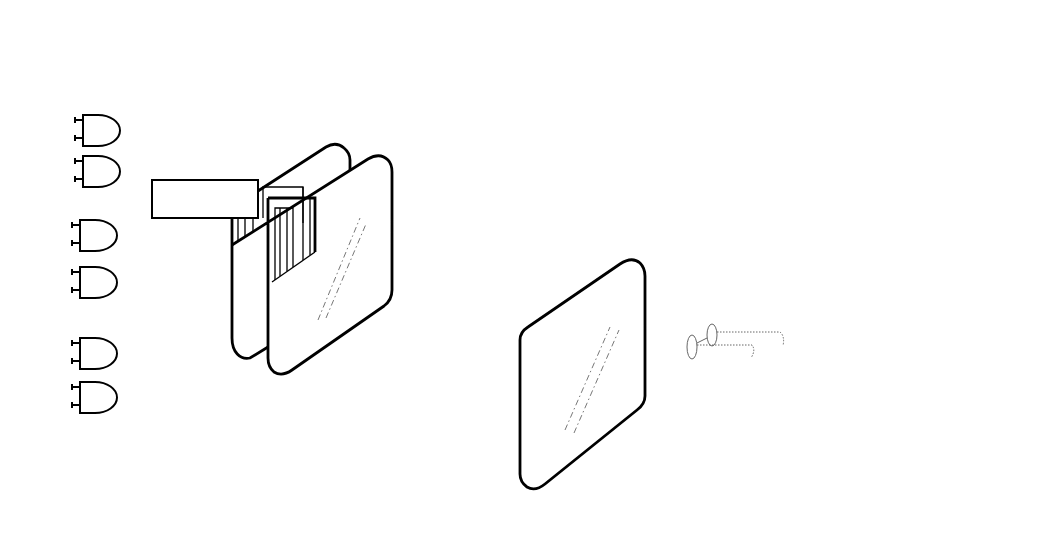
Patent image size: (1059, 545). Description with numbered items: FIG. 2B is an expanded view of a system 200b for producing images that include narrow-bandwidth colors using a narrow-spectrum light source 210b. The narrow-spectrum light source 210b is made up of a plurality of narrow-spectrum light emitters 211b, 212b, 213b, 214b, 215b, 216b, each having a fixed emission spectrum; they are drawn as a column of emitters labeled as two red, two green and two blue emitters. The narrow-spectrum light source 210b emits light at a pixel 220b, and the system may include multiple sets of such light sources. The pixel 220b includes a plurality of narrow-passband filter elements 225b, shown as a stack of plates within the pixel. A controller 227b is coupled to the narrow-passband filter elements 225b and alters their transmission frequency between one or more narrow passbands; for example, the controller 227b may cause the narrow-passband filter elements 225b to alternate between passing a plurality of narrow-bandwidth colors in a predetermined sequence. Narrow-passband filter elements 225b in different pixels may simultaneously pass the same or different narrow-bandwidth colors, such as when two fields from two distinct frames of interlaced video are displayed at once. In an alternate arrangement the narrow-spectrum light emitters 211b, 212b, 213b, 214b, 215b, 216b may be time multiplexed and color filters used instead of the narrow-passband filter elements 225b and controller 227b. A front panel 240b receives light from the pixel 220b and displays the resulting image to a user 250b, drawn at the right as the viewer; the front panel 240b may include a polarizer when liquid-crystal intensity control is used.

The system 200b is at (738, 76).
The narrow-spectrum light source 210b is at (98, 78).
The narrow-spectrum light emitter 211b is at (103, 116).
The narrow-spectrum light emitter 212b is at (110, 157).
The narrow-spectrum light emitter 213b is at (92, 218).
The narrow-spectrum light emitter 214b is at (105, 267).
The narrow-spectrum light emitter 215b is at (105, 340).
The narrow-spectrum light emitter 216b is at (113, 383).
The pixel 220b is at (284, 177).
The narrow-passband filter element 225b is at (318, 243).
The controller 227b is at (187, 180).
The front panel 240b is at (597, 282).
The user 250b is at (693, 333).